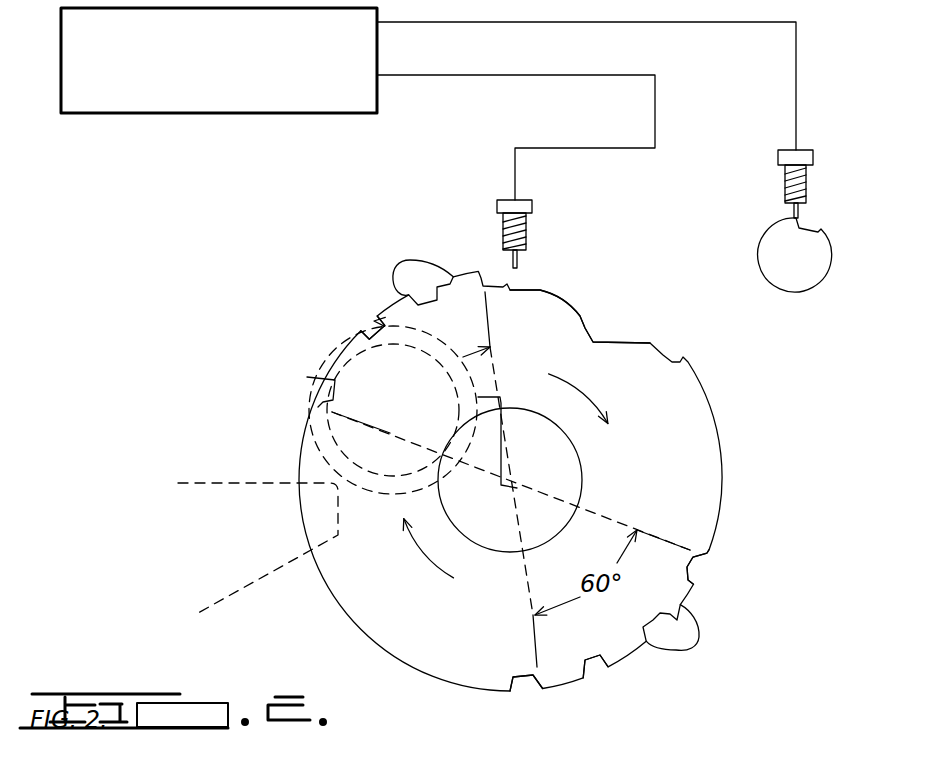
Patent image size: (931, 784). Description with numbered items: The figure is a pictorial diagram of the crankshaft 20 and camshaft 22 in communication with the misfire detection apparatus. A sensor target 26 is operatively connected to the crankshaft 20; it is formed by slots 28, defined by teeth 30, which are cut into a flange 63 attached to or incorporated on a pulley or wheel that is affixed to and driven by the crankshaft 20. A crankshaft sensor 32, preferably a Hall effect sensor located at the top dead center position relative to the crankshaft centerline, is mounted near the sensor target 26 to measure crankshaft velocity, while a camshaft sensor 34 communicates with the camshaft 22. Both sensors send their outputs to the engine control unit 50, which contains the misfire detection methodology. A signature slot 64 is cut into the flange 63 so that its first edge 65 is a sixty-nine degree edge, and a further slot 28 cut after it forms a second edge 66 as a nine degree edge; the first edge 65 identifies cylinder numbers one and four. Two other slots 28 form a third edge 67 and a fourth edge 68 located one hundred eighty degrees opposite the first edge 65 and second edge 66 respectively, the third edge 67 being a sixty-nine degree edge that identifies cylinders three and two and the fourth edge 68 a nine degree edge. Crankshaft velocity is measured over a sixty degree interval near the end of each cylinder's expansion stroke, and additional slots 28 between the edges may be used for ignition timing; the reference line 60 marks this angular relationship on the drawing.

The crankshaft 20 is at (495, 543).
The camshaft 22 is at (806, 278).
The sensor target 26 is at (315, 520).
The slots 28 is at (372, 325).
The teeth 30 is at (410, 260).
The crankshaft sensor 32 is at (527, 222).
The camshaft sensor 34 is at (780, 172).
The engine control unit 50 is at (192, 117).
The reference line 60 is at (385, 427).
The flange 63 is at (717, 417).
The signature slot 64 is at (580, 316).
The first edge 65 is at (478, 266).
The second edge 66 is at (318, 397).
The third edge 67 is at (540, 688).
The fourth edge 68 is at (707, 557).